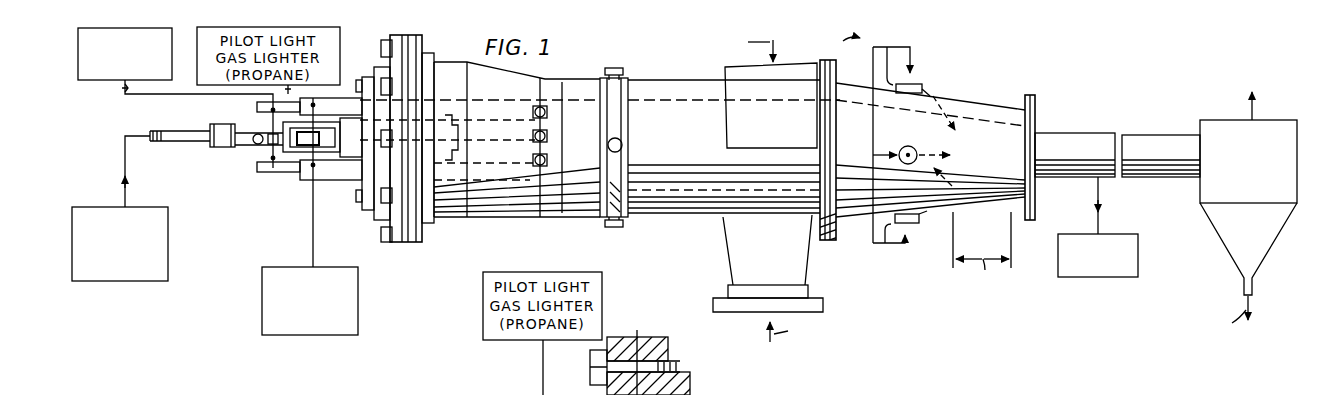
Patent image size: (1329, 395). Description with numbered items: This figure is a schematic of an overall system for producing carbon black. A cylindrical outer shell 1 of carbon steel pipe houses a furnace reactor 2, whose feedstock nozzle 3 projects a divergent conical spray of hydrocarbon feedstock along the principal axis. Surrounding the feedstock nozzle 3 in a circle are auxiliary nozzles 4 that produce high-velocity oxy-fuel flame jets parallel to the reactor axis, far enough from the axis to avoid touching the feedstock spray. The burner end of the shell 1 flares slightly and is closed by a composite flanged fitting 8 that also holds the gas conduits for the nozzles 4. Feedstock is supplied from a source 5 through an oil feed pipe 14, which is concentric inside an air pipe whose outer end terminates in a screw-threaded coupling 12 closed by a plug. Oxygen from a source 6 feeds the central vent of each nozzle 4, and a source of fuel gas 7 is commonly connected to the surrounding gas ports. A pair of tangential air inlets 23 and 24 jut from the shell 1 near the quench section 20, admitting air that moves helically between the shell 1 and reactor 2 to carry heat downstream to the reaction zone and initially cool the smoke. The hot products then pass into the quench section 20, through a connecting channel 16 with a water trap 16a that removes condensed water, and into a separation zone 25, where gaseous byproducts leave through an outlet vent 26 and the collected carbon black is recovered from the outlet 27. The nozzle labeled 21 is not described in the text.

The cylindrical outer shell 1 is at (578, 79).
The furnace reactor 2 is at (762, 80).
The feedstock nozzle 3 is at (556, 136).
The auxiliary nozzles 4 is at (556, 112).
The feedstock source 5 is at (168, 240).
The oxygen source 6 is at (105, 81).
The fuel gas source 7 is at (358, 300).
The composite flanged fitting 8 is at (415, 34).
The screw-threaded steel coupling 12 is at (224, 147).
The oil feed pipe 14 is at (180, 141).
The connecting channel 16 is at (1090, 141).
The water trap 16a is at (1106, 234).
The quench section 20 is at (968, 106).
The quench water nozzles 21 is at (920, 84).
The tangential air inlet 23 is at (787, 64).
The tangential air inlet 24 is at (822, 311).
The separation zone 25 is at (1228, 241).
The outlet vent 26 is at (1255, 106).
The carbon black outlet 27 is at (1250, 304).